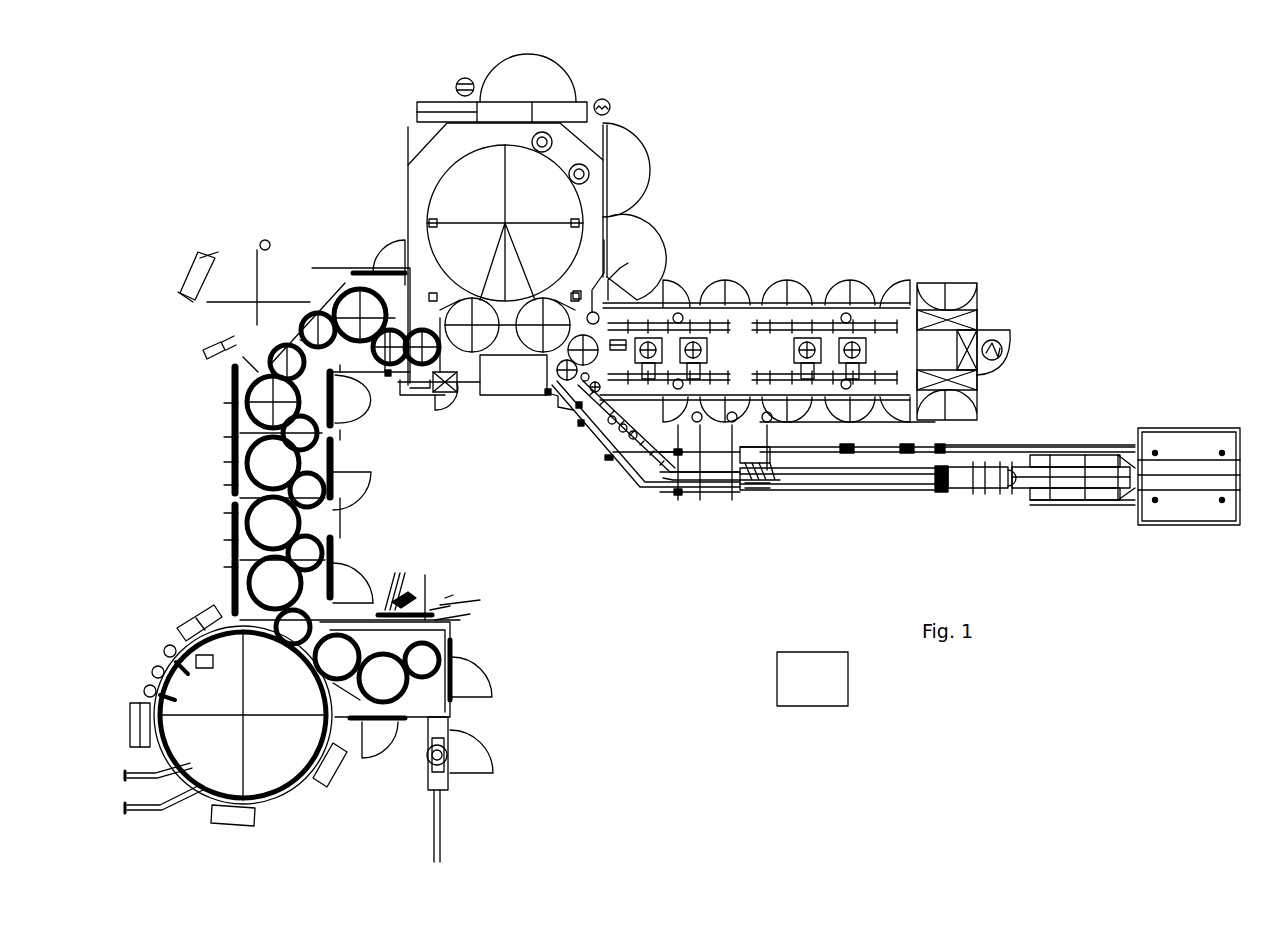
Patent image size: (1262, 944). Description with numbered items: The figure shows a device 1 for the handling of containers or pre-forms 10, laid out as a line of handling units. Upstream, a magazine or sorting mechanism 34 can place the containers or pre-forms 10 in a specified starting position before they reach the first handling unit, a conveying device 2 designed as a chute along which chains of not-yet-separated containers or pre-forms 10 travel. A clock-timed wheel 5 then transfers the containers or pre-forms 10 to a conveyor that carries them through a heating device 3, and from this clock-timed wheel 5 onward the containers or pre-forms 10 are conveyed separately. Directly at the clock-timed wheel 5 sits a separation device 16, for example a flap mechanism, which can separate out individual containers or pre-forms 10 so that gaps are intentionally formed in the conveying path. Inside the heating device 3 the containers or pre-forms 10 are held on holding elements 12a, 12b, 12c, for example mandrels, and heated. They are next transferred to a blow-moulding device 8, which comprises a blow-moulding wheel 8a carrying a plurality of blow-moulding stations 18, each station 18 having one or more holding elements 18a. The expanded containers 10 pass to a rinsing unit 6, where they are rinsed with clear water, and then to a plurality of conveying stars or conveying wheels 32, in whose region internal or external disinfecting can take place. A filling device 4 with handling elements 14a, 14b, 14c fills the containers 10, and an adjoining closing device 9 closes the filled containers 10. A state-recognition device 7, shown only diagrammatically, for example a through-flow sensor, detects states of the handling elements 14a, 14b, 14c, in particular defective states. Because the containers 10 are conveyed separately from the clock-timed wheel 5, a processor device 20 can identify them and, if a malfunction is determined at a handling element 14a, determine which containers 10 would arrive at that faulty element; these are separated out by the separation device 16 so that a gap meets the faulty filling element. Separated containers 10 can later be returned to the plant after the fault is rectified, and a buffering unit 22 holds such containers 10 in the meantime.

The device 1 is at (652, 543).
The conveying device 2 is at (597, 413).
The heating device 3 is at (793, 248).
The filling device 4 is at (195, 598).
The clock-timed wheel 5 is at (550, 395).
The rinsing unit 6 is at (240, 298).
The state-recognition device 7 is at (180, 640).
The blow-moulding device 8 is at (462, 207).
The blow-moulding wheel 8a is at (468, 153).
The closing device 9 is at (432, 612).
The containers/pre-forms 10 is at (260, 242).
The holding element 12a is at (700, 425).
The holding element 12b is at (732, 425).
The holding element 12c is at (767, 425).
The handling element 14a is at (180, 665).
The handling element 14b is at (177, 680).
The handling element 14c is at (150, 698).
The separation device 16 is at (587, 400).
The blow-moulding station 18 is at (543, 137).
The holding element 18a is at (540, 134).
The processor device 20 is at (812, 679).
The buffering unit 22 is at (495, 716).
The conveying stars 32 is at (238, 440).
The sorting mechanism 34 is at (805, 462).